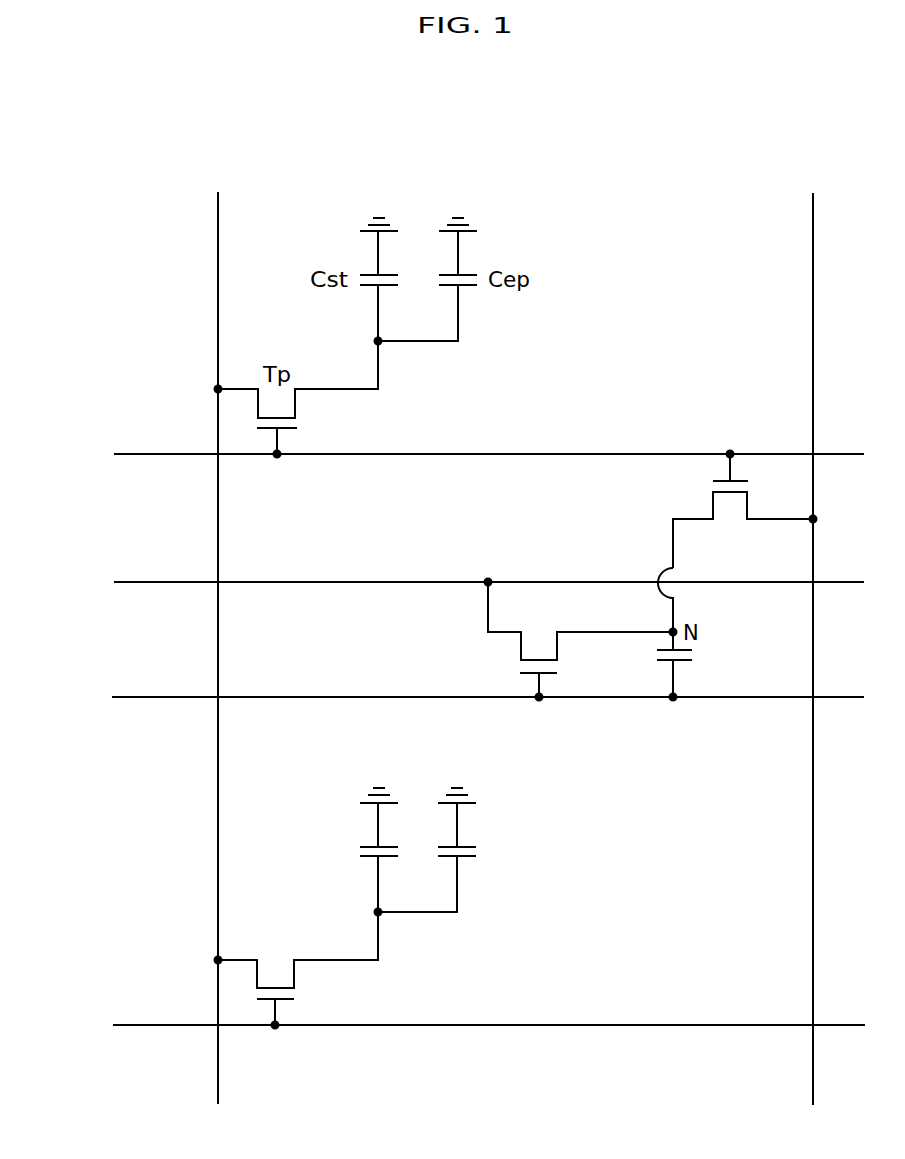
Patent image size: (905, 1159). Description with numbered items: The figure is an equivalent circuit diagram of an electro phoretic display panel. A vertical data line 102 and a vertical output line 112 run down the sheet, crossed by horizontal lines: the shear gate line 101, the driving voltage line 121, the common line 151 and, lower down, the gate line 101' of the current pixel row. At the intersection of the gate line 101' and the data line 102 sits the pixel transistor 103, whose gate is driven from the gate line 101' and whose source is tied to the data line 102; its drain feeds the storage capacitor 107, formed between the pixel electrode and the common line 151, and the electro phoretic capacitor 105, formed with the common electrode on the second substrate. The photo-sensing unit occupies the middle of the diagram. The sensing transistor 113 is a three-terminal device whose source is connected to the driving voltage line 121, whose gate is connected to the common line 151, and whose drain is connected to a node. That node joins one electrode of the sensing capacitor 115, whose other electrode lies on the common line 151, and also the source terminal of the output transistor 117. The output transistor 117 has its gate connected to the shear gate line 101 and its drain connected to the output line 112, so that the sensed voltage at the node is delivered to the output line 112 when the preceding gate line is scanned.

The data line 102 is at (219, 620).
The output line SL 112 is at (813, 621).
The gate line Gn-1 101 is at (458, 469).
The driving voltage line Vdrv 121 is at (460, 595).
The common line Vcom 151 is at (457, 712).
The gate line Gn 101' is at (460, 1040).
The output transistor T2 117 is at (737, 542).
The sensing transistor T1 113 is at (579, 640).
The sensing capacitor Cs 115 is at (642, 666).
The pixel transistor Tp 103 is at (297, 963).
The storage capacitor Cst 107 is at (354, 852).
The electro phoretic capacitor Cep 105 is at (460, 850).